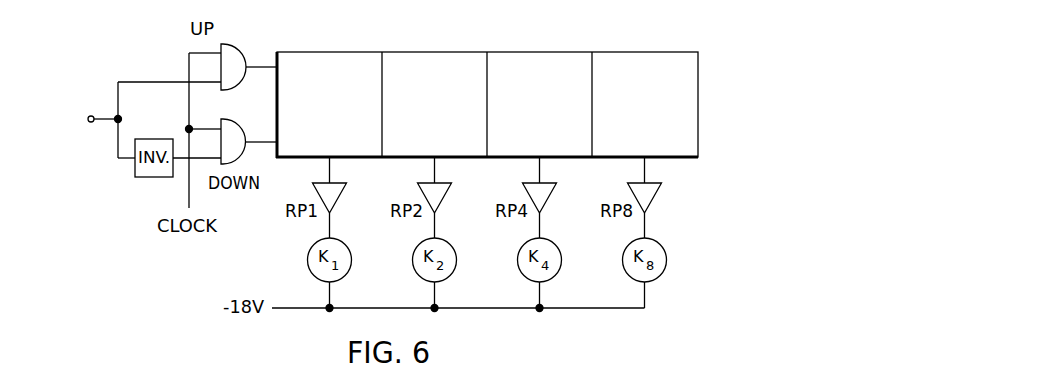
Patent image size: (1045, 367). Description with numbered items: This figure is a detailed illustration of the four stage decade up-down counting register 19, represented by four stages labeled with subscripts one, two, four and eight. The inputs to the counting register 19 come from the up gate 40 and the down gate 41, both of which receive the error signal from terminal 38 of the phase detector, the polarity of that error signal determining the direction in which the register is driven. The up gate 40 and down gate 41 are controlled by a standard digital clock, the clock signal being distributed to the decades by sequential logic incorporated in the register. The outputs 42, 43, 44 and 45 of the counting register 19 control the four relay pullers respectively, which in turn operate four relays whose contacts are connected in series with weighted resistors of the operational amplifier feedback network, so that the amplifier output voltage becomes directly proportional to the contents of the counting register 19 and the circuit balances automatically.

The terminal 38 is at (87, 118).
The counting register 19 is at (464, 44).
The up gate 40 is at (258, 53).
The down gate 41 is at (230, 119).
The output 42 is at (335, 185).
The output 43 is at (440, 185).
The output 44 is at (545, 185).
The output 45 is at (650, 185).